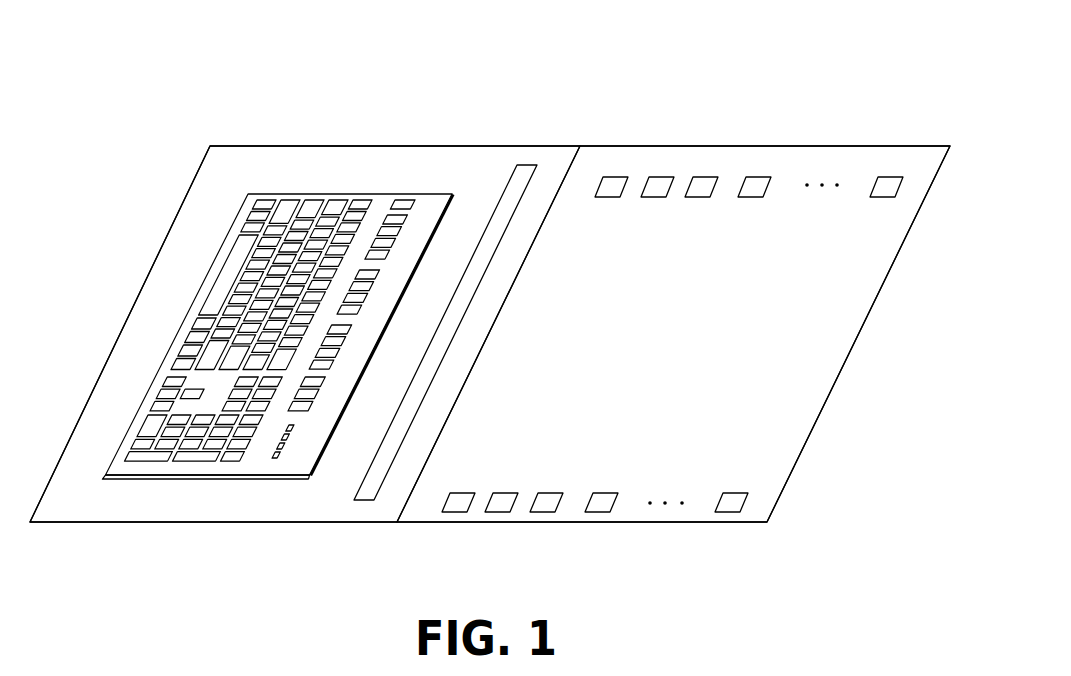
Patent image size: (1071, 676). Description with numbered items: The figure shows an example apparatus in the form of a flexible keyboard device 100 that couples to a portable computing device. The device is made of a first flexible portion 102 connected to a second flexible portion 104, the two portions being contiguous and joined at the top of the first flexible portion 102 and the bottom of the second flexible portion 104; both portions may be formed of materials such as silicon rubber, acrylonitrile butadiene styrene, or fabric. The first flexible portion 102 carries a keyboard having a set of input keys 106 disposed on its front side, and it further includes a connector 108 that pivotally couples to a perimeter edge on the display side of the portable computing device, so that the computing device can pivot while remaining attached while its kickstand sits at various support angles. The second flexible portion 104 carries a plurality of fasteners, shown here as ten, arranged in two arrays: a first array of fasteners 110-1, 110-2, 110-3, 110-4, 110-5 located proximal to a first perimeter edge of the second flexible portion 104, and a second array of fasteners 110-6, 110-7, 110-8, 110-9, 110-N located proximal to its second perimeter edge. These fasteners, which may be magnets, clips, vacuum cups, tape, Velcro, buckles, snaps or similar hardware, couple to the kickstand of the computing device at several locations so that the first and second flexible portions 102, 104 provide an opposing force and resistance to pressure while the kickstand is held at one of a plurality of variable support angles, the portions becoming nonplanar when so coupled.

The flexible keyboard device 100 is at (814, 72).
The first flexible portion 102 is at (312, 145).
The second flexible portion 104 is at (927, 152).
The set of input keys 106 is at (360, 184).
The connector 108 is at (528, 165).
The fastener 110-1 is at (608, 194).
The fastener 110-2 is at (662, 180).
The fastener 110-3 is at (697, 194).
The fastener 110-4 is at (763, 180).
The fastener 110-5 is at (878, 196).
The fastener 110-6 is at (455, 512).
The fastener 110-7 is at (505, 500).
The fastener 110-8 is at (543, 510).
The fastener 110-9 is at (598, 500).
The fastener 110-N is at (727, 510).